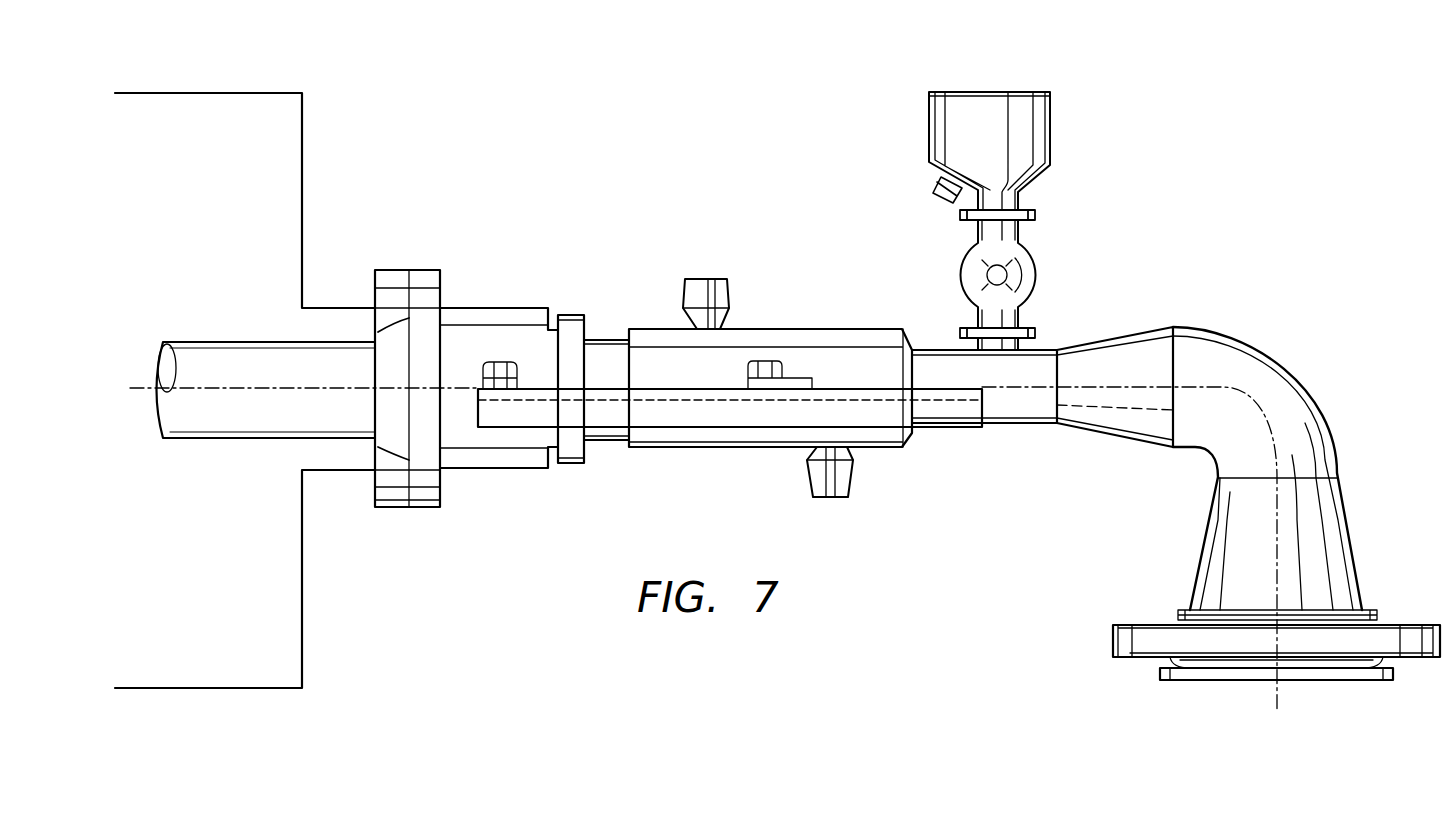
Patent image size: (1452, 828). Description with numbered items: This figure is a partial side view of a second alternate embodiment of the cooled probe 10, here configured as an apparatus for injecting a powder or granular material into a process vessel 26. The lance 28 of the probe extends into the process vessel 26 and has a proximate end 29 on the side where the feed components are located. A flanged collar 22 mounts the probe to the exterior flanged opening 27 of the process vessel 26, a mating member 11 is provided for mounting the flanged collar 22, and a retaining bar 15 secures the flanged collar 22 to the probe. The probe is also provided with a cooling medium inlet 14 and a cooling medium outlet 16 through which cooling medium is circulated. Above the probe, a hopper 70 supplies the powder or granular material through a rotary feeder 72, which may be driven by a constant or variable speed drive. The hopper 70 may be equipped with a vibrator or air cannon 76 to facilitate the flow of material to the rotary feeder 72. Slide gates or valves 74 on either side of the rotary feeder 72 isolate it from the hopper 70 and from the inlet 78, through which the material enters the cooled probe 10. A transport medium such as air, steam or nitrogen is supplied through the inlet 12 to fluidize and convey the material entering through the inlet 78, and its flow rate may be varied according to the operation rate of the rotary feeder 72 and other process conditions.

The cooled probe 10 is at (622, 152).
The mating member 11 is at (573, 465).
The inlet 12 is at (1332, 680).
The cooling medium inlet 14 is at (838, 497).
The retaining bar 15 is at (693, 430).
The cooling medium outlet 16 is at (714, 282).
The flanged collar 22 is at (420, 508).
The process vessel 26 is at (181, 92).
The exterior flanged opening 27 is at (395, 270).
The lance 28 is at (216, 336).
The proximate end 29 is at (601, 340).
The hopper 70 is at (1050, 115).
The rotary feeder 72 is at (1038, 278).
The slide gates or valves 74 is at (1037, 215).
The vibrator or air cannon 76 is at (937, 198).
The inlet 78 is at (962, 346).